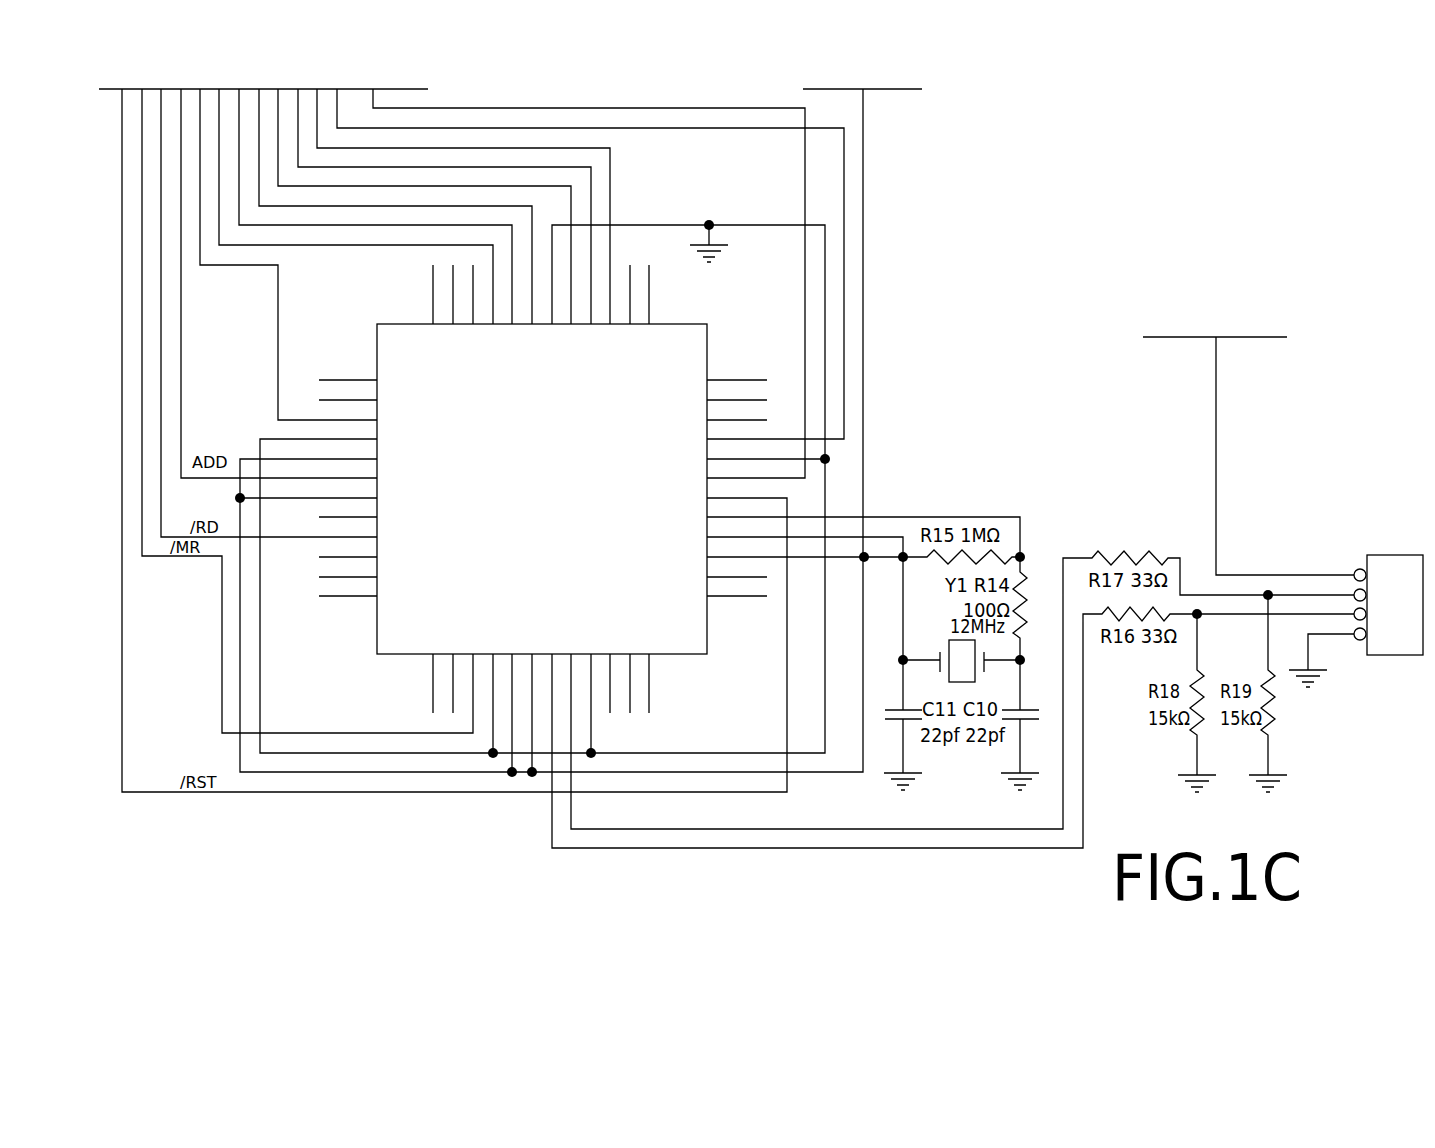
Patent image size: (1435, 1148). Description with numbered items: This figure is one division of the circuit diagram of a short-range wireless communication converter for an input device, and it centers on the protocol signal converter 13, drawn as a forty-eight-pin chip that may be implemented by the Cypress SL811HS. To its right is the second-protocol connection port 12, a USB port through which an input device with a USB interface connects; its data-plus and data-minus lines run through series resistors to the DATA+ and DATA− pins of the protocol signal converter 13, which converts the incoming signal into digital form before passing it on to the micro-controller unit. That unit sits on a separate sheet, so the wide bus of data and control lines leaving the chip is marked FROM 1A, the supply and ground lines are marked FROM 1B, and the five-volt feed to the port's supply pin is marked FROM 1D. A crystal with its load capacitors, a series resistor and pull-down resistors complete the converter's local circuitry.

The protocol signal converter 13 is at (377, 626).
The second-protocol connection port 12 is at (1413, 555).
The bus from FIG. 1A is at (471, 432).
The bus from FIG. 1B is at (642, 424).
The supply from FIG. 1D is at (1278, 450).